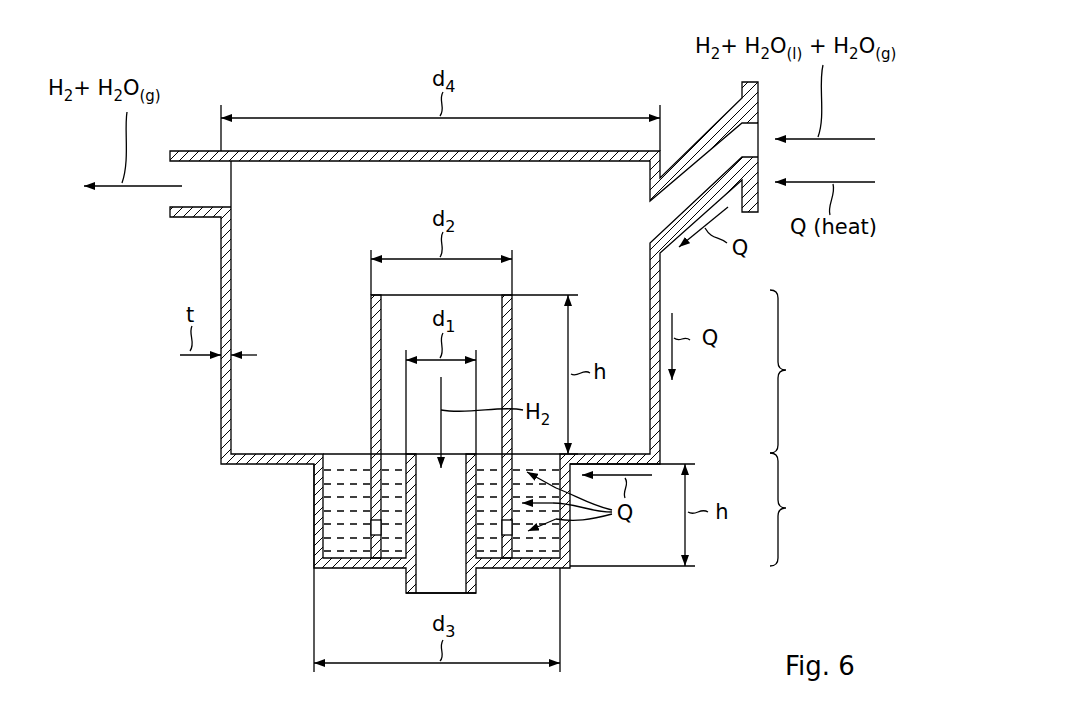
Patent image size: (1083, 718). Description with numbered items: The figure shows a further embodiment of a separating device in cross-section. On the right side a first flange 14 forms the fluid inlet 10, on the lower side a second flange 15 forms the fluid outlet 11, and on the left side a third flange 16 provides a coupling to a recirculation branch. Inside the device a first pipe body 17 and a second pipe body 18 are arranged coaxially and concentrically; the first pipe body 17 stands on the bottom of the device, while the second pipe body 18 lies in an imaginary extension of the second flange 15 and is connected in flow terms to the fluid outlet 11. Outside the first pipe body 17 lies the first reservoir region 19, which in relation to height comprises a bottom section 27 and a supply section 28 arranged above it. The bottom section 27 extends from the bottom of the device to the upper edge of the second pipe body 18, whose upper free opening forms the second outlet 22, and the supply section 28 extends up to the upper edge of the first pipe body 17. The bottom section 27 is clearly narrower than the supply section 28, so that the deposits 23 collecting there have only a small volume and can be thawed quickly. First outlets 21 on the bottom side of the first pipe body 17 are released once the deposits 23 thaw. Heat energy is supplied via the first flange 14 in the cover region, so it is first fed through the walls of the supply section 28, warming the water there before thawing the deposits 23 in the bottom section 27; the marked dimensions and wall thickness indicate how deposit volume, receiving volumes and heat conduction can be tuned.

The fluid inlet 10 is at (777, 210).
The first flange 14 is at (825, 160).
The fluid outlet 11 is at (485, 593).
The second flange 15 is at (477, 585).
The third flange 16 is at (183, 151).
The first pipe body 17 is at (371, 357).
The second pipe body 18 is at (388, 456).
The first reservoir region 19 is at (337, 523).
The first outlets 21 is at (372, 528).
The second outlet 22 is at (428, 463).
The deposits 23 is at (318, 480).
The bottom section 27 is at (786, 508).
The supply section 28 is at (786, 370).